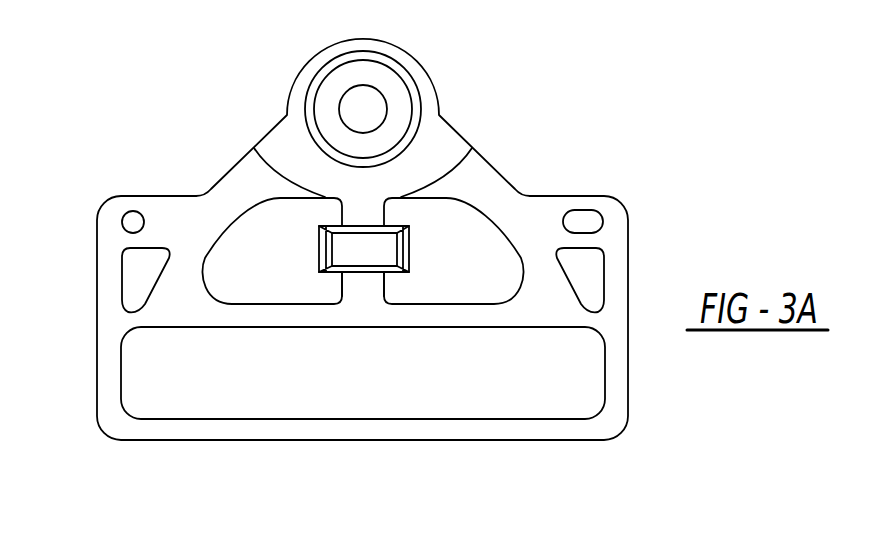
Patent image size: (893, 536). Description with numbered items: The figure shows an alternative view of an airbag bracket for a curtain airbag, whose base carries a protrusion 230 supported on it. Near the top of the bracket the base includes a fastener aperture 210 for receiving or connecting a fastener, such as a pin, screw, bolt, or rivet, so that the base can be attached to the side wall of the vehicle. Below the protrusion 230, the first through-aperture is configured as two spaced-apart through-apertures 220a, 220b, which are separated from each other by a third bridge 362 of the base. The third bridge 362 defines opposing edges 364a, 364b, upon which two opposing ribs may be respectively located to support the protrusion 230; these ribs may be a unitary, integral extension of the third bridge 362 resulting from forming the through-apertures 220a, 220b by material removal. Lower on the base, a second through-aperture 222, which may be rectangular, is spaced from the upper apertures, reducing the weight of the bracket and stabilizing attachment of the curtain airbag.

The fastener aperture 210 is at (375, 93).
The third bridge 362 is at (373, 202).
The protrusion 230 is at (385, 245).
The through-aperture 220a is at (262, 230).
The through-aperture 220b is at (480, 257).
The second through-aperture 222 is at (153, 352).
The opposing edge 364a is at (337, 288).
The opposing edge 364b is at (389, 287).